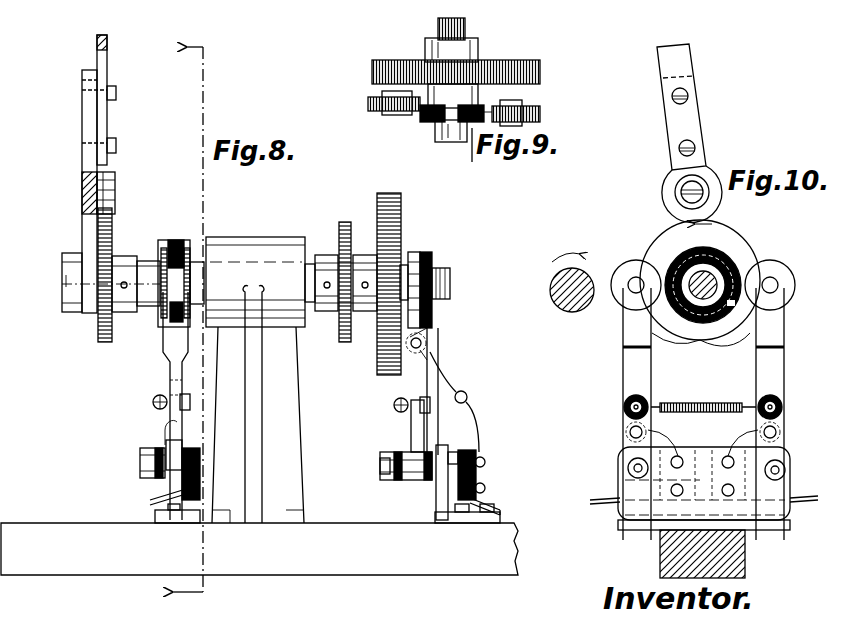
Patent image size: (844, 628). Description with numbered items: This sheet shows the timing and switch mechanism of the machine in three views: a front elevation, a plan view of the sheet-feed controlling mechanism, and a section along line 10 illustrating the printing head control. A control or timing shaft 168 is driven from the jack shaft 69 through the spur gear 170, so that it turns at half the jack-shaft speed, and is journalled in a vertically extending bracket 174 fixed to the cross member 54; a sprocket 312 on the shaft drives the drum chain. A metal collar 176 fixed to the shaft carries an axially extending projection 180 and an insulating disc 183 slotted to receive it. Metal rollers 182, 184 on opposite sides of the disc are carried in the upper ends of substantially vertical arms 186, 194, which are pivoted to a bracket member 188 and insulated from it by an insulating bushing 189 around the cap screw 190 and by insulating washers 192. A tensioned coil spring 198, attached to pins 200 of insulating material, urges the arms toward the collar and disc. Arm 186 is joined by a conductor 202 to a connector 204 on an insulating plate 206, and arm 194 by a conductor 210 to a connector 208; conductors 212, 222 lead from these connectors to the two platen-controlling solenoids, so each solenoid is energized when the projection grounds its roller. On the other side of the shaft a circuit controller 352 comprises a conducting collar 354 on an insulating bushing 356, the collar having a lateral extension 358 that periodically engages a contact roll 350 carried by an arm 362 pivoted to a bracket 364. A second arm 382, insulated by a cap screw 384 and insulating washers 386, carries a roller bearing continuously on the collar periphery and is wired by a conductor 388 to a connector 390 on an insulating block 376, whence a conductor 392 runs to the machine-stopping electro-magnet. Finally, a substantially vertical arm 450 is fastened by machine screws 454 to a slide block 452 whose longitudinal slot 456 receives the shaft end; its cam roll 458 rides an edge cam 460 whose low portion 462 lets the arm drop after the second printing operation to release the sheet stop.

In FIG. 8, the section line 10 is at (169, 322).
In FIG. 8, the cross member 54 is at (340, 566).
In FIG. 10, the cross member 54 is at (732, 566).
In FIG. 10, the jack shaft 69 is at (556, 308).
In FIG. 8, the timing shaft 168 is at (450, 280).
In FIG. 9, the timing shaft 168 is at (466, 28).
In FIG. 10, the timing shaft 168 is at (714, 282).
In FIG. 8, the spur gear 170 is at (396, 213).
In FIG. 9, the spur gear 170 is at (518, 60).
In FIG. 8, the bracket 174 is at (272, 401).
In FIG. 8, the metal collar 176 is at (166, 242).
In FIG. 10, the axially extending projection 180 is at (742, 304).
In FIG. 10, the metal roller 182 is at (784, 282).
In FIG. 8, the insulating disc 183 is at (176, 240).
In FIG. 10, the insulating disc 183 is at (736, 258).
In FIG. 8, the metal roller 184 is at (165, 312).
In FIG. 10, the metal roller 184 is at (614, 300).
In FIG. 10, the arm 186 is at (776, 384).
In FIG. 8, the bracket member 188 is at (200, 488).
In FIG. 10, the bracket member 188 is at (778, 464).
In FIG. 8, the insulating bushing 189 is at (196, 448).
In FIG. 10, the insulating bushing 189 is at (790, 452).
In FIG. 8, the cap screw 190 is at (140, 462).
In FIG. 10, the cap screw 190 is at (781, 470).
In FIG. 8, the insulating washers 192 is at (158, 478).
In FIG. 10, the arm 194 is at (628, 382).
In FIG. 10, the coil spring 198 is at (695, 398).
In FIG. 10, the pins 200 is at (623, 409).
In FIG. 10, the conductor 202 is at (739, 437).
In FIG. 10, the connector 204 is at (706, 469).
In FIG. 8, the insulating plate 206 is at (192, 505).
In FIG. 10, the insulating plate 206 is at (668, 503).
In FIG. 10, the connector 208 is at (622, 484).
In FIG. 10, the conductor 210 is at (657, 434).
In FIG. 10, the conductor 212 is at (796, 502).
In FIG. 10, the conductor 222 is at (592, 502).
In FIG. 8, the sprocket 312 is at (344, 222).
In FIG. 9, the contact roll 350 is at (505, 111).
In FIG. 8, the circuit controller 352 is at (422, 252).
In FIG. 9, the circuit controller 352 is at (478, 156).
In FIG. 9, the collar 354 is at (485, 100).
In FIG. 9, the insulating bushing 356 is at (420, 114).
In FIG. 8, the lateral extension 358 is at (433, 254).
In FIG. 9, the lateral extension 358 is at (436, 132).
In FIG. 8, the arm 362 is at (440, 352).
In FIG. 9, the arm 362 is at (542, 120).
In FIG. 8, the bracket 364 is at (437, 510).
In FIG. 8, the insulating block 376 is at (462, 452).
In FIG. 8, the arm 382 is at (410, 428).
In FIG. 8, the cap screw 384 is at (380, 472).
In FIG. 8, the insulating washers 386 is at (412, 480).
In FIG. 8, the conductor 388 is at (466, 387).
In FIG. 8, the connector 390 is at (478, 470).
In FIG. 8, the conductor 392 is at (482, 502).
In FIG. 8, the arm 450 is at (97, 47).
In FIG. 10, the arm 450 is at (688, 62).
In FIG. 8, the slide block 452 is at (82, 128).
In FIG. 10, the slide block 452 is at (664, 192).
In FIG. 8, the machine screws 454 is at (116, 144).
In FIG. 10, the machine screws 454 is at (689, 142).
In FIG. 8, the longitudinal slot 456 is at (88, 248).
In FIG. 10, the longitudinal slot 456 is at (686, 246).
In FIG. 8, the cam roll 458 is at (112, 172).
In FIG. 10, the cam roll 458 is at (708, 172).
In FIG. 8, the edge cam 460 is at (97, 335).
In FIG. 10, the edge cam 460 is at (740, 235).
In FIG. 10, the low portion 462 is at (730, 346).